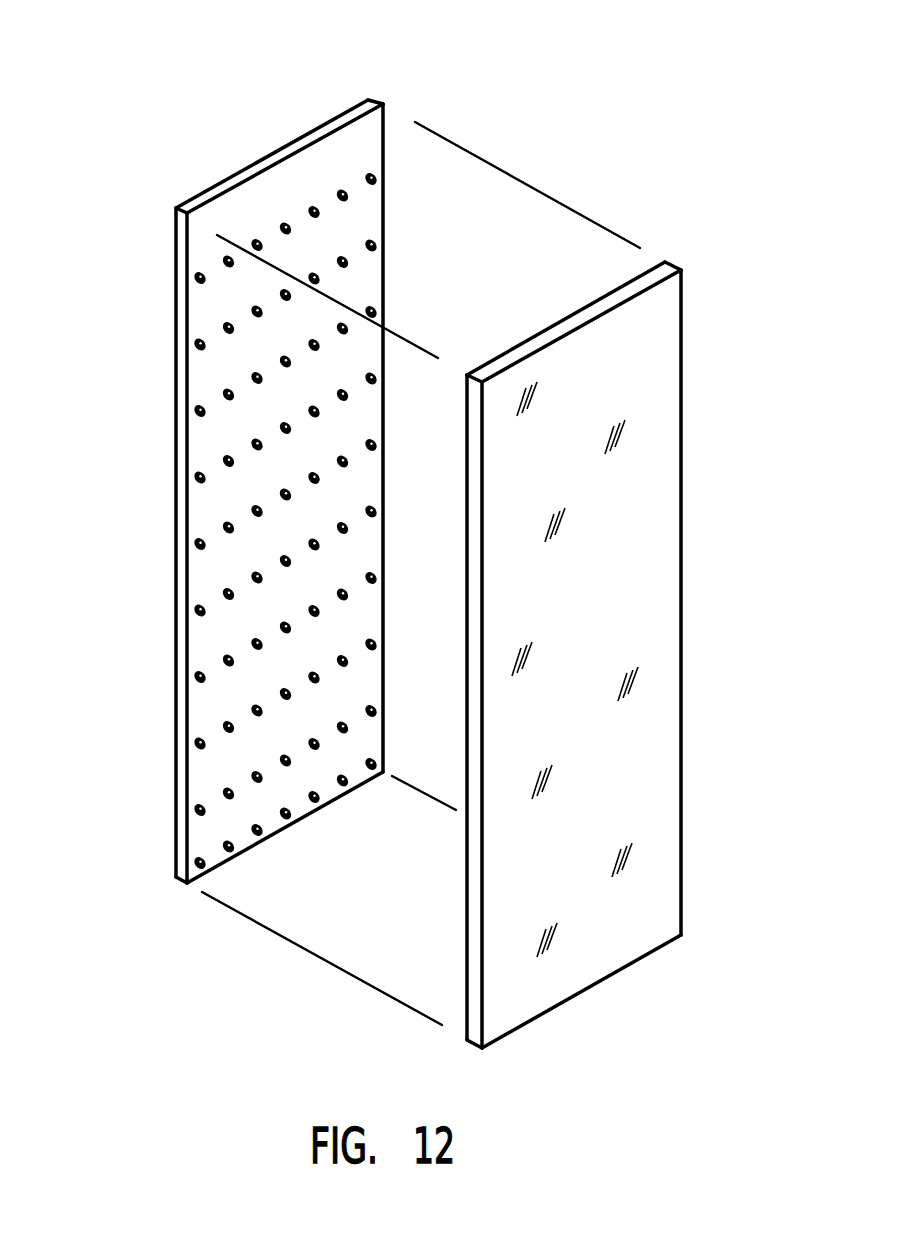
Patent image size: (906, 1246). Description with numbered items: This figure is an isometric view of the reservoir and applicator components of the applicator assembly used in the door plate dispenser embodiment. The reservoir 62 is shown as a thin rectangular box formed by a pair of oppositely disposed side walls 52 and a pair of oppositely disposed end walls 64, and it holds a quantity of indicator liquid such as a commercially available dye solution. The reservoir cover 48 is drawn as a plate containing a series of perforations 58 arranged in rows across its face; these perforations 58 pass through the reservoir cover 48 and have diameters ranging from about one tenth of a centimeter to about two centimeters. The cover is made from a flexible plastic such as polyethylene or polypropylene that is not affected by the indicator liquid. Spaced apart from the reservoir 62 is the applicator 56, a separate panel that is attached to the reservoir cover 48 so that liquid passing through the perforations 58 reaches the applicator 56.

The reservoir 62 is at (152, 146).
The end walls 64 is at (333, 128).
The reservoir cover 48 is at (362, 282).
The perforations 58 is at (229, 397).
The side walls 52 is at (220, 449).
The applicator 56 is at (640, 748).